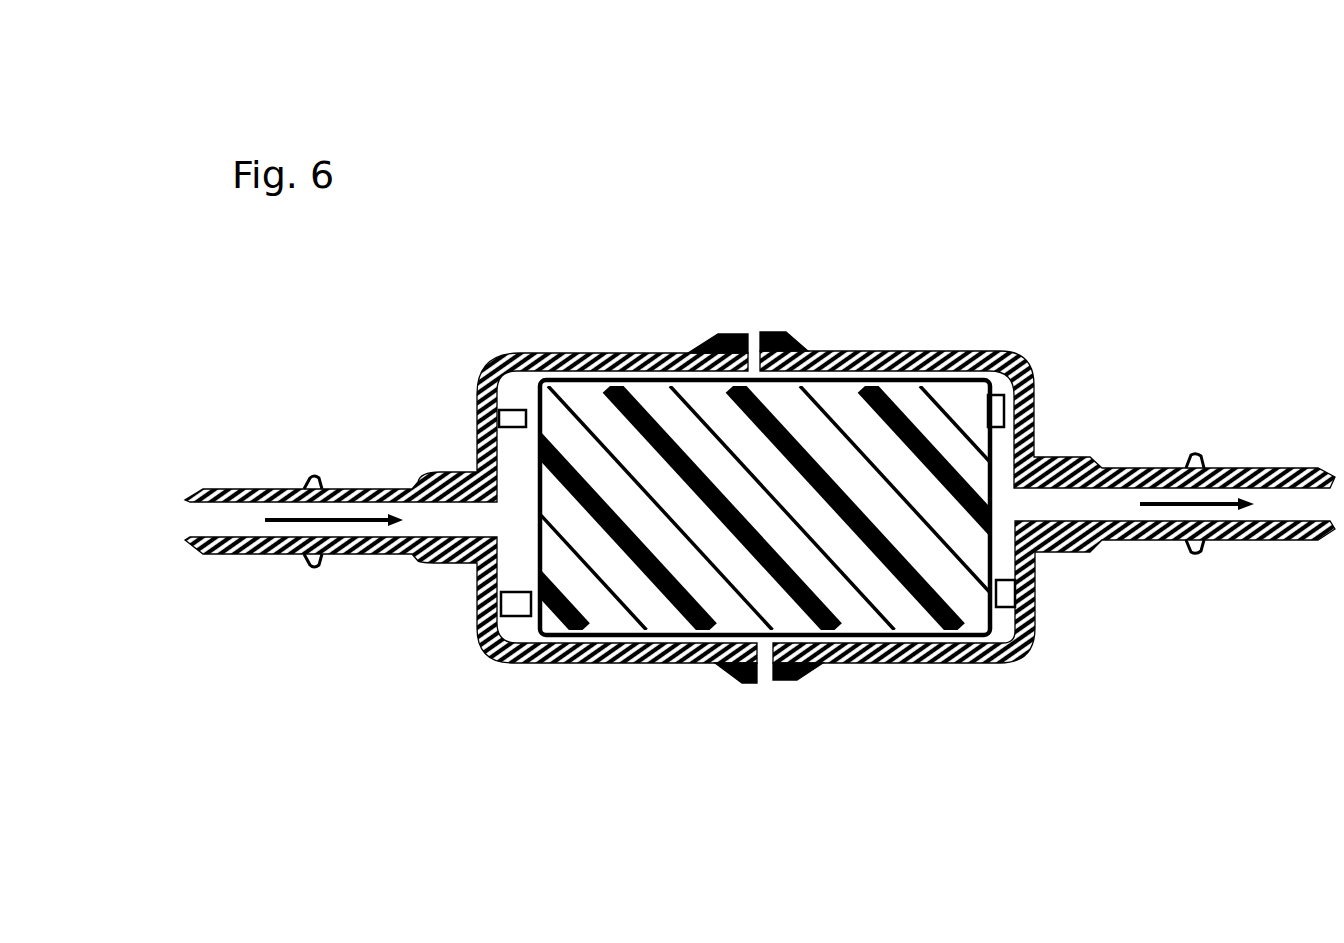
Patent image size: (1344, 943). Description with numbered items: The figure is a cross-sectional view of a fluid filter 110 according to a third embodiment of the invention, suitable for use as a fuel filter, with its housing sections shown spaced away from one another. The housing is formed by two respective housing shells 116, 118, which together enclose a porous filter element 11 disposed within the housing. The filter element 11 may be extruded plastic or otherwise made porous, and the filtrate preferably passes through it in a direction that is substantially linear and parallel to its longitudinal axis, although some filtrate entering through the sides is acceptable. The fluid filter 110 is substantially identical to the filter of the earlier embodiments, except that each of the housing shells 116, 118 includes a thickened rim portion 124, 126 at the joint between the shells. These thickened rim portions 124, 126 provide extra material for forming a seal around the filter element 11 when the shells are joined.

The fluid filter 110 is at (1022, 287).
The housing shell 116 is at (607, 325).
The housing shell 118 is at (898, 325).
The thickened rim portion 124 is at (723, 327).
The thickened rim portion 126 is at (772, 327).
The filter element 11 is at (867, 628).